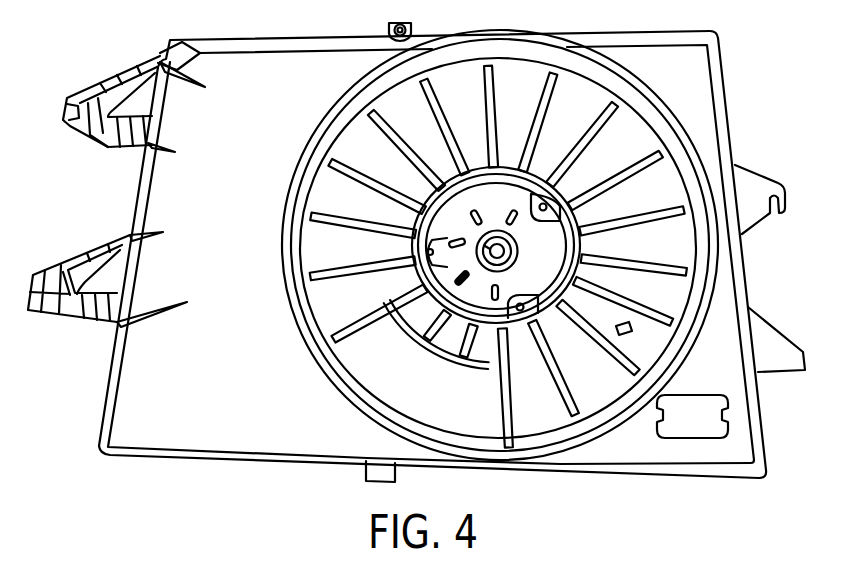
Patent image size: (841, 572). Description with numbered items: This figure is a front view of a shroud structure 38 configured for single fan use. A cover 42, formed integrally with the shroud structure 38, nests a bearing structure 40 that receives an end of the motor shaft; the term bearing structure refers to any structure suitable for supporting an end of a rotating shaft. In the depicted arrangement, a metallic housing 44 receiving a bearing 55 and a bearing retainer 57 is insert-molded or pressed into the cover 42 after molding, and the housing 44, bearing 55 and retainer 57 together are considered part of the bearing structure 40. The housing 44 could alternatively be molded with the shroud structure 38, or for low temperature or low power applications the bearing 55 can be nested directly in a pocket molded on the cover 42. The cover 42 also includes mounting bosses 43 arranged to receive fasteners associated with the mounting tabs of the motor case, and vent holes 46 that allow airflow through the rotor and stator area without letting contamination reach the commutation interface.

The shroud structure 38 is at (738, 88).
The bearing structure 40 is at (493, 262).
The cover 42 is at (420, 283).
The mounting bosses 43 is at (542, 203).
The metallic housing 44 is at (403, 322).
The vent holes 46 is at (480, 212).
The bearing 55 is at (515, 260).
The bearing retainer 57 is at (488, 247).